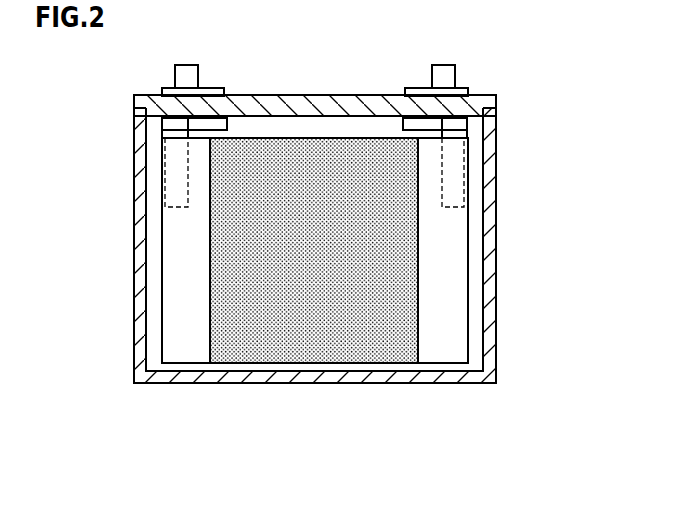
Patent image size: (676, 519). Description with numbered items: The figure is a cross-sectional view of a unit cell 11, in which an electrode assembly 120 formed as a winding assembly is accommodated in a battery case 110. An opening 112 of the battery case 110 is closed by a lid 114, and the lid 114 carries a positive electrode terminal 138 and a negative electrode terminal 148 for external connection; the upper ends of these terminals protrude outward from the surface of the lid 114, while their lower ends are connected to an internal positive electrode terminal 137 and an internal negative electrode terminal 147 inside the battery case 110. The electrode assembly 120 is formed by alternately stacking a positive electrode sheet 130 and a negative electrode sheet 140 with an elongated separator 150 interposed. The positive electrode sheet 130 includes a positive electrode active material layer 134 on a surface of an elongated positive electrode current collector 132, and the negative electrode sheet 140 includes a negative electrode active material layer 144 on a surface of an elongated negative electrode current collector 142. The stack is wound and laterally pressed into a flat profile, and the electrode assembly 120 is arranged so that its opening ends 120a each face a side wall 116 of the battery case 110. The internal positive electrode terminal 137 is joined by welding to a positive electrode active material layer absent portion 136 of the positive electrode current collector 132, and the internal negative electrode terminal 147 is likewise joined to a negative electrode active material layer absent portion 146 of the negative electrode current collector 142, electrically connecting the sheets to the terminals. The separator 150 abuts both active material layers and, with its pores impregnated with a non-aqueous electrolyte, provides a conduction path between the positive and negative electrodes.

The unit cell 11 is at (543, 37).
The battery case 110 is at (322, 239).
The opening 112 is at (301, 129).
The lid 114 is at (253, 96).
The side wall 116 is at (135, 222).
The electrode assembly 120 is at (322, 243).
The opening end 120a is at (152, 252).
The positive electrode sheet 130 is at (162, 241).
The positive electrode current collector 132 is at (180, 351).
The positive electrode active material layer 134 is at (228, 349).
The positive electrode active material layer absent portion 136 is at (175, 331).
The internal positive electrode terminal 137 is at (175, 126).
The positive electrode terminal 138 is at (185, 72).
The negative electrode sheet 140 is at (474, 241).
The negative electrode current collector 142 is at (446, 350).
The negative electrode active material layer 144 is at (400, 349).
The negative electrode active material layer absent portion 146 is at (455, 332).
The internal negative electrode terminal 147 is at (455, 127).
The negative electrode terminal 148 is at (443, 72).
The separator 150 is at (315, 350).